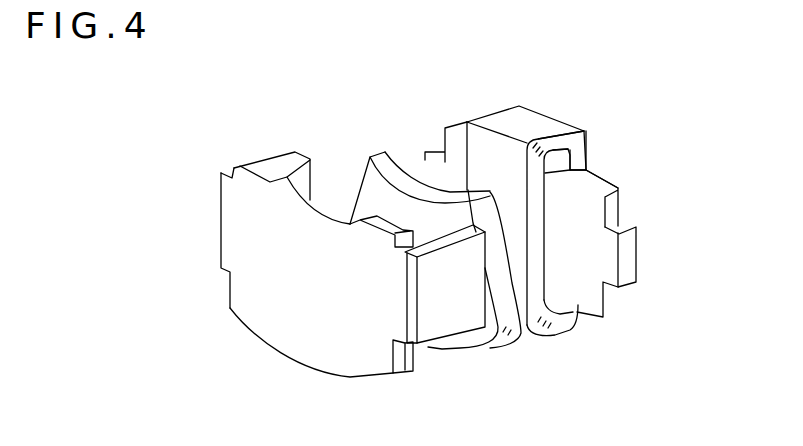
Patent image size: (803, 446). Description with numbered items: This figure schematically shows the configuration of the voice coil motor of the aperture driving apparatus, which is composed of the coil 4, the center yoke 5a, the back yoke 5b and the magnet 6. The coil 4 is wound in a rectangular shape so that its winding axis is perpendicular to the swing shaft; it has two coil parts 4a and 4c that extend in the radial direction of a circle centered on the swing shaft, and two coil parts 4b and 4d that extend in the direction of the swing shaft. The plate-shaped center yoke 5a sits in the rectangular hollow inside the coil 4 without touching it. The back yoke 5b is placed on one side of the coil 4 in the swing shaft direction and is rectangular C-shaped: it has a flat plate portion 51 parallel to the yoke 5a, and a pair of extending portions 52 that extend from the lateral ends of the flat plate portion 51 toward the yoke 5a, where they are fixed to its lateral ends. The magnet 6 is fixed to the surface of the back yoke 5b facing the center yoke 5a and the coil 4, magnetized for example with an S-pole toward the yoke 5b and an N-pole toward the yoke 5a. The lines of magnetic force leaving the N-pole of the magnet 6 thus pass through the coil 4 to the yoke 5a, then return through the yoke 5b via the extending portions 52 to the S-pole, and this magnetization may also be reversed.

The coil 4 is at (591, 139).
The coil part 4a is at (537, 208).
The coil part 4b is at (555, 328).
The coil part 4c is at (579, 158).
The coil part 4d is at (561, 140).
The center yoke 5a is at (594, 252).
The back yoke 5b is at (300, 307).
The magnet 6 is at (393, 157).
The flat plate portion 51 is at (247, 235).
The extending portions 52 is at (277, 160).